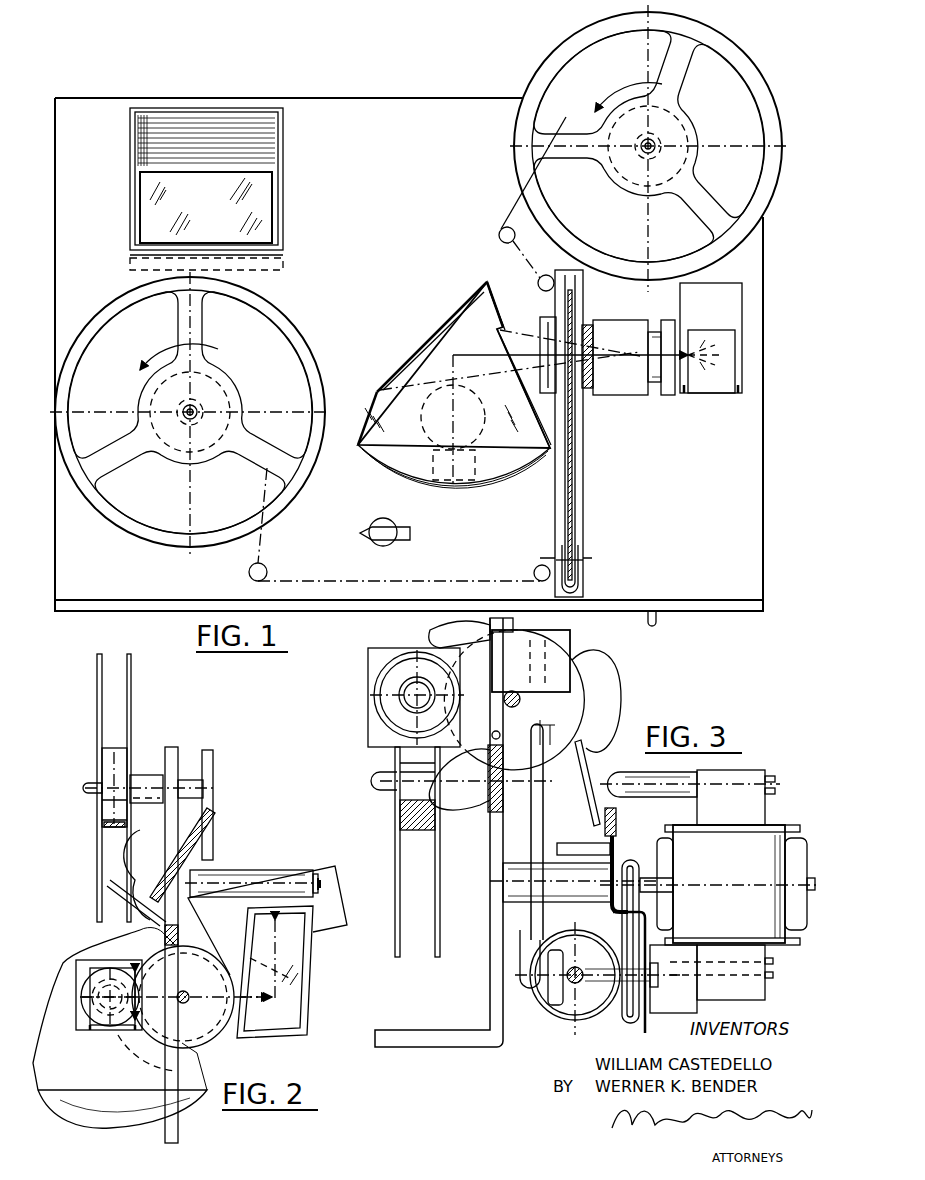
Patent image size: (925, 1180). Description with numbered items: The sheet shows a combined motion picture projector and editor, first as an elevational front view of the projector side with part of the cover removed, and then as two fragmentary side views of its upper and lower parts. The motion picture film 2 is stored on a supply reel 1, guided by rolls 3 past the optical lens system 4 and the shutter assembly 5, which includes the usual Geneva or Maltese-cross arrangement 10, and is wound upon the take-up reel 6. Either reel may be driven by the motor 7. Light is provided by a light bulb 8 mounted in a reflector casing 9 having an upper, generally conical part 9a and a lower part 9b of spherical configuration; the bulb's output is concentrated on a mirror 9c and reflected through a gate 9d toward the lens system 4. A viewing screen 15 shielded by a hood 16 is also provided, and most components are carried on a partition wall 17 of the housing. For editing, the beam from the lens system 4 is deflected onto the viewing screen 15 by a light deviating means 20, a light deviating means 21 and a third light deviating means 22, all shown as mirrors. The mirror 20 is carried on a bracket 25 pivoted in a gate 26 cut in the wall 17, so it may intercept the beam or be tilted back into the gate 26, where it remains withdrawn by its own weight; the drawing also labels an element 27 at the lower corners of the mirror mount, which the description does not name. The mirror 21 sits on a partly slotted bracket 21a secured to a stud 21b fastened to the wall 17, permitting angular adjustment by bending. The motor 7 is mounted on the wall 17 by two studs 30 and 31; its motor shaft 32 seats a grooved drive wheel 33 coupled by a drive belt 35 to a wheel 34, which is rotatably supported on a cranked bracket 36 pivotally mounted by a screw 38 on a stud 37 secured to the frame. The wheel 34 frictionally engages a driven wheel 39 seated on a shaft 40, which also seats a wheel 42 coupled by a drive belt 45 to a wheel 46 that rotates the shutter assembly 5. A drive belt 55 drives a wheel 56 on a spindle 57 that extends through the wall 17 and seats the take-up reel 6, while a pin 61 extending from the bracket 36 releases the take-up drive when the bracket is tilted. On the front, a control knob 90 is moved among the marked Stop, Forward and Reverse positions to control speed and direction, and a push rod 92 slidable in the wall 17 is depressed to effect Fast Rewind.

In FIG. 1, the supply reel 1 is at (713, 45).
In FIG. 1, the motion picture film 2 is at (520, 207).
In FIG. 1, the rolls 3 is at (538, 280).
In FIG. 1, the optical lens system 4 is at (619, 400).
In FIG. 2, the optical lens system 4 is at (78, 1033).
In FIG. 3, the optical lens system 4 is at (367, 720).
In FIG. 1, the shutter assembly 5 is at (586, 312).
In FIG. 1, the take-up reel 6 is at (280, 335).
In FIG. 2, the take-up reel 6 is at (132, 687).
In FIG. 3, the take-up reel 6 is at (442, 884).
In FIG. 3, the motor 7 is at (772, 842).
In FIG. 1, the light bulb 8 is at (386, 463).
In FIG. 1, the reflector casing 9 is at (487, 470).
In FIG. 2, the reflector casing 9 is at (75, 1113).
In FIG. 1, the upper conical part 9a is at (390, 408).
In FIG. 1, the lower part 9b is at (522, 462).
In FIG. 1, the mirror 9c is at (443, 338).
In FIG. 1, the gate 9d is at (505, 355).
In FIG. 2, the Geneva or Maltese-cross arrangement 10 is at (222, 1043).
In FIG. 3, the Geneva or Maltese-cross arrangement 10 is at (600, 680).
In FIG. 1, the viewing screen 15 is at (262, 212).
In FIG. 2, the viewing screen 15 is at (205, 876).
In FIG. 1, the hood 16 is at (270, 150).
In FIG. 2, the hood 16 is at (145, 777).
In FIG. 1, the partition wall 17 is at (748, 472).
In FIG. 2, the partition wall 17 is at (178, 750).
In FIG. 3, the partition wall 17 is at (490, 962).
In FIG. 1, the light deviating means 20 is at (725, 378).
In FIG. 2, the light deviating means 20 is at (97, 975).
In FIG. 3, the light deviating means 20 is at (572, 637).
In FIG. 2, the light deviating means 21 is at (300, 1028).
In FIG. 2, the bracket 21a is at (295, 998).
In FIG. 2, the stud 21b is at (290, 870).
In FIG. 2, the light deviating means 22 is at (320, 896).
In FIG. 2, the bracket 25 is at (100, 1030).
In FIG. 3, the bracket 25 is at (488, 643).
In FIG. 1, the gate 26 is at (735, 305).
In FIG. 1, the mounting lugs 27 is at (735, 396).
In FIG. 2, the mounting lugs 27 is at (135, 1060).
In FIG. 3, the mounting lugs 27 is at (492, 738).
In FIG. 3, the stud 30 is at (640, 780).
In FIG. 3, the stud 31 is at (672, 1010).
In FIG. 3, the motor shaft 32 is at (616, 836).
In FIG. 3, the grooved drive wheel 33 is at (645, 893).
In FIG. 3, the wheel 34 is at (637, 1005).
In FIG. 3, the drive belt 35 is at (626, 1020).
In FIG. 3, the cranked bracket 36 is at (613, 912).
In FIG. 3, the stud 37 is at (503, 893).
In FIG. 3, the screw 38 is at (610, 880).
In FIG. 3, the driven wheel 39 is at (562, 1010).
In FIG. 3, the shaft 40 is at (598, 960).
In FIG. 1, the wheel 42 is at (578, 578).
In FIG. 1, the drive belt 45 is at (568, 504).
In FIG. 1, the wheel 46 is at (552, 323).
In FIG. 2, the drive belt 55 is at (210, 785).
In FIG. 2, the wheel 56 is at (212, 765).
In FIG. 2, the spindle 57 is at (190, 780).
In FIG. 3, the pin 61 is at (578, 840).
In FIG. 1, the control knob 90 is at (388, 544).
In FIG. 1, the push rod 92 is at (657, 622).